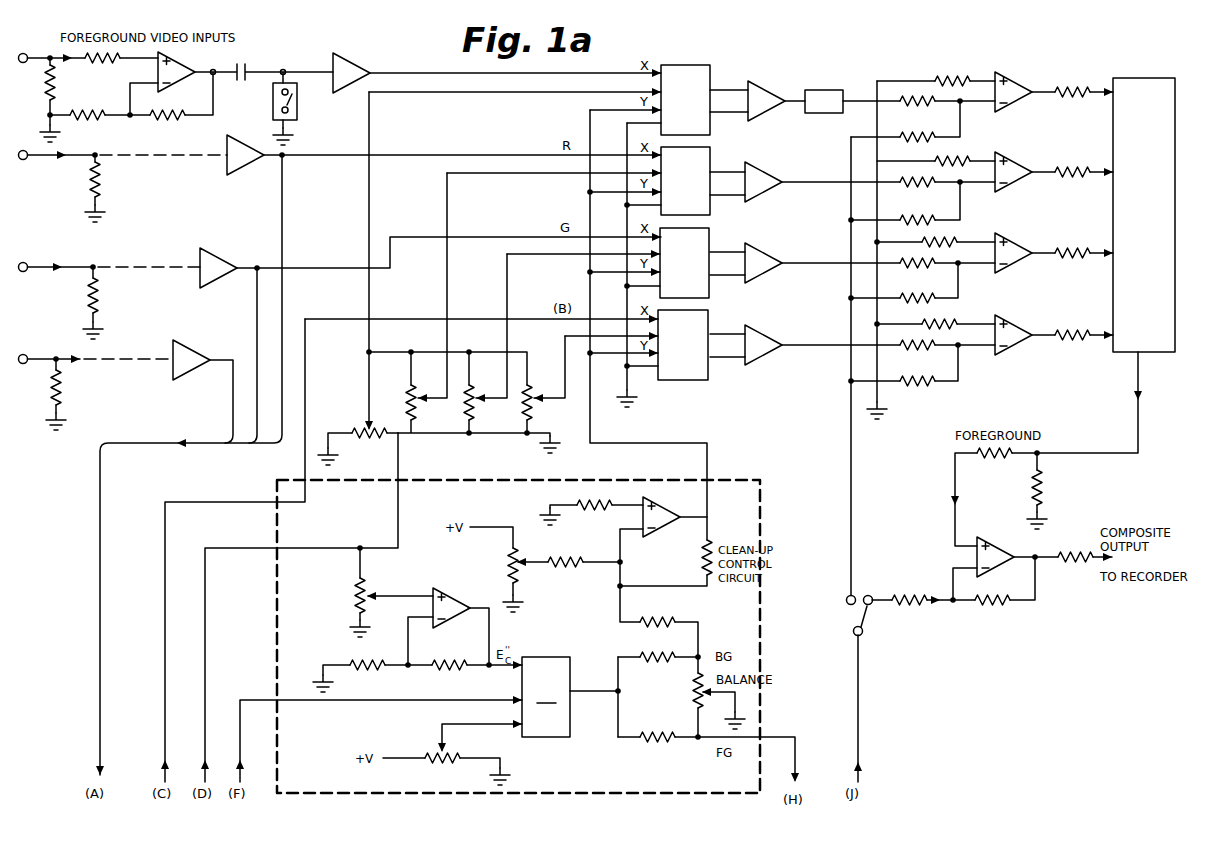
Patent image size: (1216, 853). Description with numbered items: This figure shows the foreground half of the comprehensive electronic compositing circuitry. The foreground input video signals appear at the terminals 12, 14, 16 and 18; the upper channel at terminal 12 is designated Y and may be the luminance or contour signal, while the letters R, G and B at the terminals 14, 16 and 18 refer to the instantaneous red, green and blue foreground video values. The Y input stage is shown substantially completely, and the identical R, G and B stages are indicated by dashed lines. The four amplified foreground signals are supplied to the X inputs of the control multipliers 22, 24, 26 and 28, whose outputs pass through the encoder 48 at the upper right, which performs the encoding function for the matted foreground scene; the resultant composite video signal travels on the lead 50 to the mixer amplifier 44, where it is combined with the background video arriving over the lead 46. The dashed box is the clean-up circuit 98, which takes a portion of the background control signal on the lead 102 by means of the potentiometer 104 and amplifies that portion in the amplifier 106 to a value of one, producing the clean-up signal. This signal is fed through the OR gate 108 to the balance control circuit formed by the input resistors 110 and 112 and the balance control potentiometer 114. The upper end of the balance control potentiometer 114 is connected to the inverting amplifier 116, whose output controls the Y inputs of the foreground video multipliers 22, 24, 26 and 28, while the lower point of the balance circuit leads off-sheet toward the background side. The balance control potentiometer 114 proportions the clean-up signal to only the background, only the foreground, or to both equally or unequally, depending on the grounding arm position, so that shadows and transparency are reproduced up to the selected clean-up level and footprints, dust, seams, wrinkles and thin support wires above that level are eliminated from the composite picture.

The foreground input terminal 12 is at (27, 54).
The foreground input terminal 14 is at (29, 159).
The foreground input terminal 16 is at (27, 263).
The foreground input terminal 18 is at (27, 355).
The control multiplier 22 is at (697, 126).
The control multiplier 24 is at (697, 206).
The control multiplier 26 is at (696, 288).
The control multiplier 28 is at (695, 370).
The mixer amplifier 44 is at (991, 540).
The lead 46 is at (861, 710).
The encoder 48 is at (1156, 217).
The lead 50 is at (1099, 452).
The clean-up circuit 98 is at (766, 497).
The lead 102 is at (393, 509).
The potentiometer 104 is at (351, 599).
The amplifier 106 is at (453, 590).
The OR gate 108 is at (556, 655).
The input resistor 110 is at (648, 653).
The input resistor 112 is at (652, 742).
The balance control potentiometer 114 is at (690, 695).
The inverting amplifier 116 is at (668, 533).